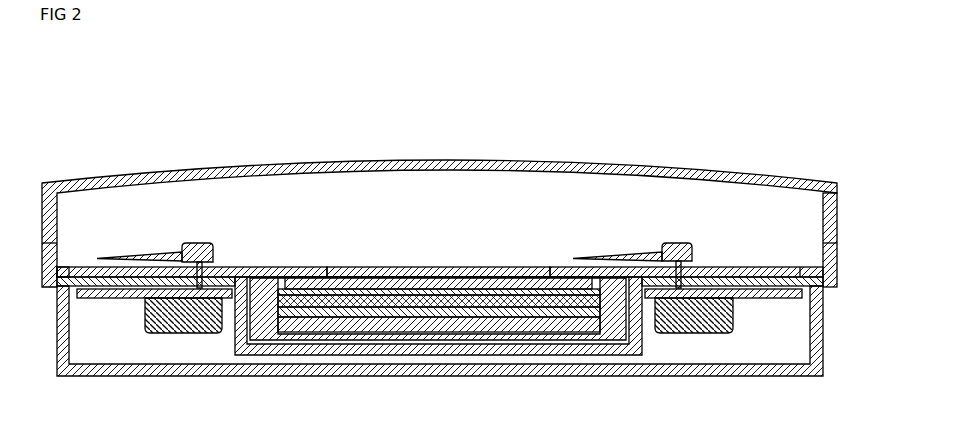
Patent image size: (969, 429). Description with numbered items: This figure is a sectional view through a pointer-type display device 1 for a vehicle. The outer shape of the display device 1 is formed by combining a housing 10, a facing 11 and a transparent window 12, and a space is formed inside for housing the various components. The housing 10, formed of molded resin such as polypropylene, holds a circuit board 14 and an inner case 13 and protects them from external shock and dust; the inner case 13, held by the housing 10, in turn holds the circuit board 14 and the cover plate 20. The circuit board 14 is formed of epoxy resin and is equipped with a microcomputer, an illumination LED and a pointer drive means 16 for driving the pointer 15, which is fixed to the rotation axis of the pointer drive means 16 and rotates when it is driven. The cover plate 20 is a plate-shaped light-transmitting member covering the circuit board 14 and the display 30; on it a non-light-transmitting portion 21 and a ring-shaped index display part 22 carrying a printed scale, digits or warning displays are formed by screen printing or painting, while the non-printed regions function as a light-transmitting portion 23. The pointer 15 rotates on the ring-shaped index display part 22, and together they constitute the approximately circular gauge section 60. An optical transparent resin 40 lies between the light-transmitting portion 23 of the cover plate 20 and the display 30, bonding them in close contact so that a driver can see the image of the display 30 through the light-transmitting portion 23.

The display device 1 is at (713, 90).
The housing 10 is at (540, 377).
The facing 11 is at (838, 222).
The transparent window 12 is at (602, 163).
The inner case 13 is at (397, 357).
The circuit board 14 is at (88, 298).
The pointer 15 is at (187, 243).
The pointer drive means 16 is at (185, 334).
The cover plate 20 is at (320, 266).
The non-light-transmitting portion 21 is at (68, 265).
The ring-shaped index display part 22 is at (238, 266).
The light-transmitting portion 23 is at (485, 268).
The display 30 is at (298, 342).
The optical transparent resin 40 is at (390, 275).
The gauge section 60 is at (277, 129).